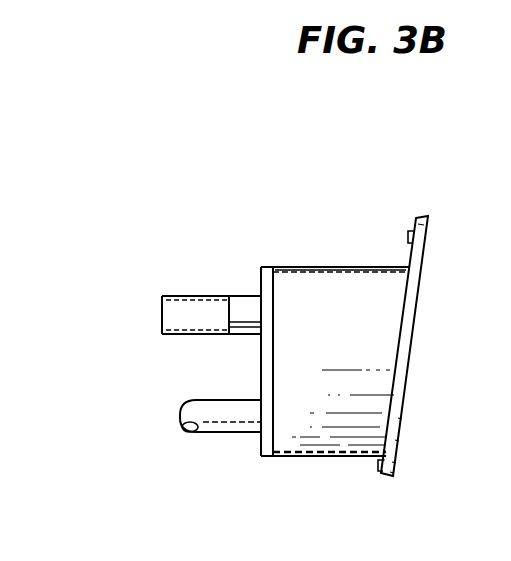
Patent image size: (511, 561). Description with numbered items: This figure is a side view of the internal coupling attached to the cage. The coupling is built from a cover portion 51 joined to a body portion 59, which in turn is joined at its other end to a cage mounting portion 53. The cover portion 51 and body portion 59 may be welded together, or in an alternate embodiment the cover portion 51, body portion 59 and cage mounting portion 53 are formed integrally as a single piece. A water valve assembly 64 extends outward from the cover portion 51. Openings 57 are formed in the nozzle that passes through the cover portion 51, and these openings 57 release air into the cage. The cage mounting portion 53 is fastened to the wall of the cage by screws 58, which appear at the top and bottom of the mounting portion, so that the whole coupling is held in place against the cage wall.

The cover portion 51 is at (262, 267).
The cage mounting portion 53 is at (428, 216).
The openings 57 is at (186, 433).
The screws 58 is at (408, 238).
The body portion 59 is at (313, 267).
The water valve assembly 64 is at (183, 296).